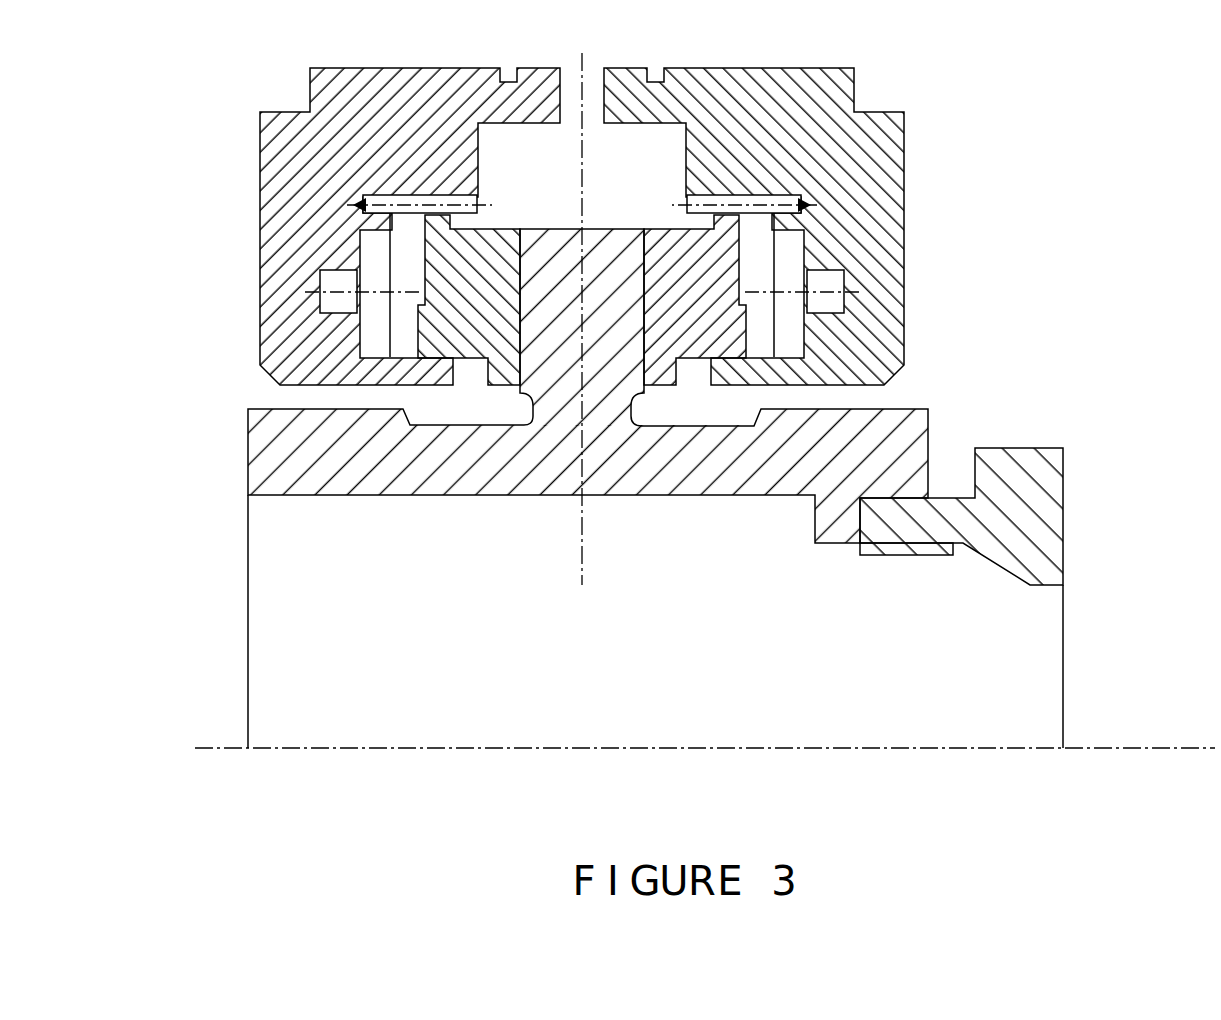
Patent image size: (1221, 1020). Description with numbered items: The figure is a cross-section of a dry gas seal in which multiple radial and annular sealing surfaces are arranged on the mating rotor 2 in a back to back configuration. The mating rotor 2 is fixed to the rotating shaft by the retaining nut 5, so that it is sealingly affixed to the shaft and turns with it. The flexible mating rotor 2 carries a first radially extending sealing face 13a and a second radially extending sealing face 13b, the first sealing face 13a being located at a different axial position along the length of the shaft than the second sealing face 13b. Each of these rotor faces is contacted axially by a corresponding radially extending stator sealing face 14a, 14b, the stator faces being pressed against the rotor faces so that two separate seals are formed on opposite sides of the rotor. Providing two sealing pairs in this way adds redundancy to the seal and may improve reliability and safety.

The mating rotor 2 is at (805, 460).
The retaining nut 5 is at (1003, 490).
The first radially extending sealing face 13a is at (520, 300).
The second radially extending sealing face 13b is at (644, 300).
The first stator sealing face 14a is at (502, 305).
The second stator sealing face 14b is at (662, 306).